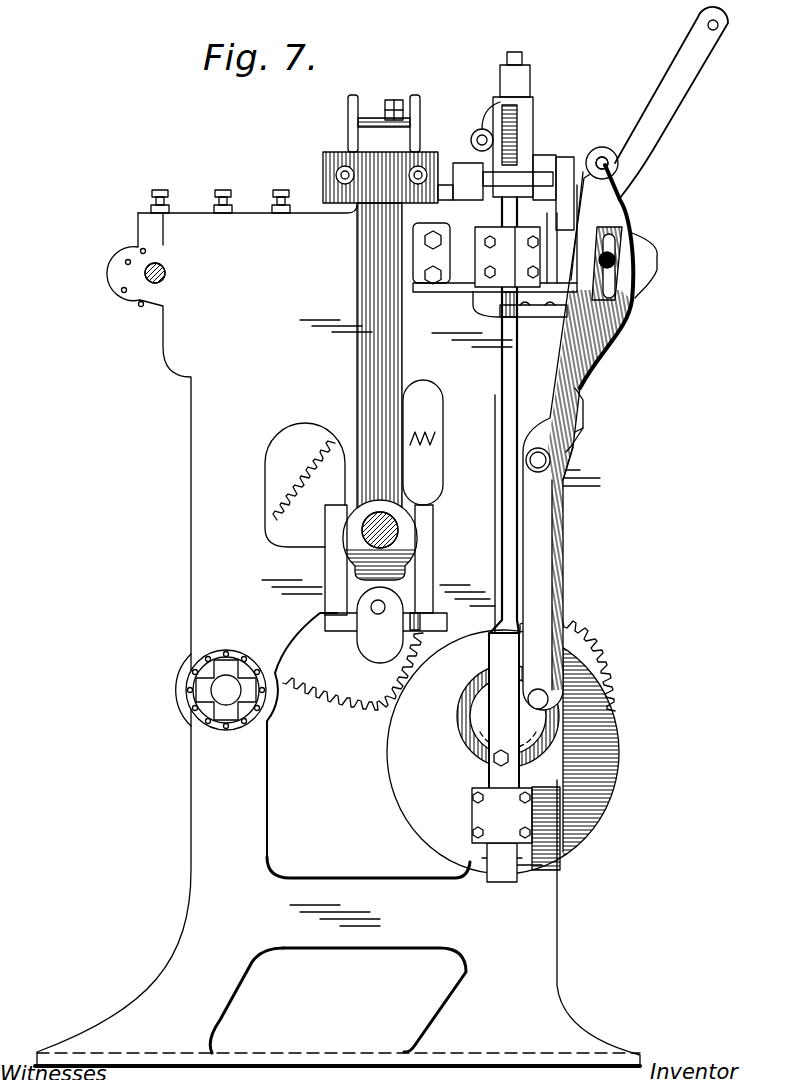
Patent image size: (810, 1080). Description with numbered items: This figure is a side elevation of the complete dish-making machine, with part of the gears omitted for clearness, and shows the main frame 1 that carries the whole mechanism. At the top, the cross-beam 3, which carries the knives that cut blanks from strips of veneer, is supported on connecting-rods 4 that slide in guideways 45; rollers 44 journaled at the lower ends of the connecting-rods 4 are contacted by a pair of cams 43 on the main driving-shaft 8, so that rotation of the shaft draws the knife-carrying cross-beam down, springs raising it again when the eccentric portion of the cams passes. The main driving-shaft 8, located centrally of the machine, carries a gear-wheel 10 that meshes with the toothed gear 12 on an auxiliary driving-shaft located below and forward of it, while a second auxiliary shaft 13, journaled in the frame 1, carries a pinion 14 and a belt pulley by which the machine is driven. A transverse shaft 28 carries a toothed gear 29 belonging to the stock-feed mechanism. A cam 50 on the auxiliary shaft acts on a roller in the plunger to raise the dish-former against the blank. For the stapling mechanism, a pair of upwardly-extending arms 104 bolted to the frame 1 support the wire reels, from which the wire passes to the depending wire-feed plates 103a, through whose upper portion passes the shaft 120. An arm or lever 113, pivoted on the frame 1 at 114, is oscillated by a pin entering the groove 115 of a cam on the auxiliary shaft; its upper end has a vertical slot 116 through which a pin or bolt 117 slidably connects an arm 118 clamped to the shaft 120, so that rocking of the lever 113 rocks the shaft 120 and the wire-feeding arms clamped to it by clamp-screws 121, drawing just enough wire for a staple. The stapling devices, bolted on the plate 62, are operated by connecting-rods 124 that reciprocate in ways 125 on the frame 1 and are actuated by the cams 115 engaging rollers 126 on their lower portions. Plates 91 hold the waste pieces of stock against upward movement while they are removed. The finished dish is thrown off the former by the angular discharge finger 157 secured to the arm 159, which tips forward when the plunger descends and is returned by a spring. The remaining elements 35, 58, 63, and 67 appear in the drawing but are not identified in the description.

The main frame 1 is at (355, 907).
The cross-beam 3 is at (384, 123).
The connecting-rods 4 is at (388, 331).
The main driving-shaft 8 is at (315, 558).
The gear-wheel 10 is at (305, 485).
The toothed gear 12 is at (588, 667).
The second auxiliary shaft 13 is at (224, 688).
The pinion 14 is at (256, 710).
The transverse shaft 28 is at (166, 273).
The toothed gear 29 is at (130, 284).
The bolts 35 is at (223, 190).
The cams 43 is at (370, 508).
The rollers 44 is at (360, 590).
The guideways 45 is at (330, 586).
The cam 50 is at (503, 752).
The housing 58 is at (536, 102).
The plate 62 is at (597, 156).
The shoe 63 is at (545, 162).
The cap nut 67 is at (522, 56).
The plates 91 is at (558, 307).
The wire-feed plates 103a is at (658, 276).
The upwardly-extending arms 104 is at (690, 101).
The arm or lever 113 is at (546, 520).
The pivot 114 is at (552, 461).
The cam groove 115 is at (478, 691).
The vertical slot 116 is at (614, 240).
The pin or bolt 117 is at (628, 275).
The arm 118 is at (596, 192).
The shaft 120 is at (614, 163).
The clamp-screws 121 is at (507, 257).
The connecting-rods 124 is at (502, 712).
The ways 125 is at (516, 828).
The rollers 126 is at (494, 761).
The discharge finger 157 is at (584, 410).
The arm 159 is at (577, 436).